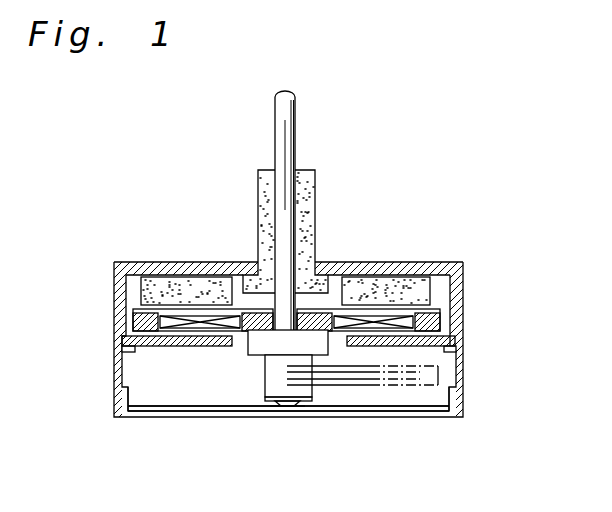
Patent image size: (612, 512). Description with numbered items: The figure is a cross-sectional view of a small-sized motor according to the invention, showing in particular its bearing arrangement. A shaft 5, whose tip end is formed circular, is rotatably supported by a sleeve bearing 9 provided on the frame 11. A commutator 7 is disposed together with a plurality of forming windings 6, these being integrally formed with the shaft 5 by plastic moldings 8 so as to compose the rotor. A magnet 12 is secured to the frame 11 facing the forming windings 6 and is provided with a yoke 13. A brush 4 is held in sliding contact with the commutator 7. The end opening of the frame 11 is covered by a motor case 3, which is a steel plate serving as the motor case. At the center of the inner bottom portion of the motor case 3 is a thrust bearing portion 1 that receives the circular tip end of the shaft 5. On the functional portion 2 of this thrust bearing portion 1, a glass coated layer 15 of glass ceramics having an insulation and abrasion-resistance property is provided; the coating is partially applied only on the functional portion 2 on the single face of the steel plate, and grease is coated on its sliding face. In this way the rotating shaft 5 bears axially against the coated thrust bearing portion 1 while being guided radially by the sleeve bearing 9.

The thrust bearing portion 1 is at (277, 407).
The functional portion 2 is at (302, 408).
The motor case 3 is at (397, 412).
The brush 4 is at (436, 374).
The shaft 5 is at (295, 100).
The forming windings 6 is at (450, 302).
The commutator 7 is at (273, 370).
The plastic moldings 8 is at (460, 317).
The sleeve bearing 9 is at (315, 180).
The frame 11 is at (377, 262).
The magnet 12 is at (445, 260).
The yoke 13 is at (460, 338).
The glass coated layer 15 is at (288, 408).